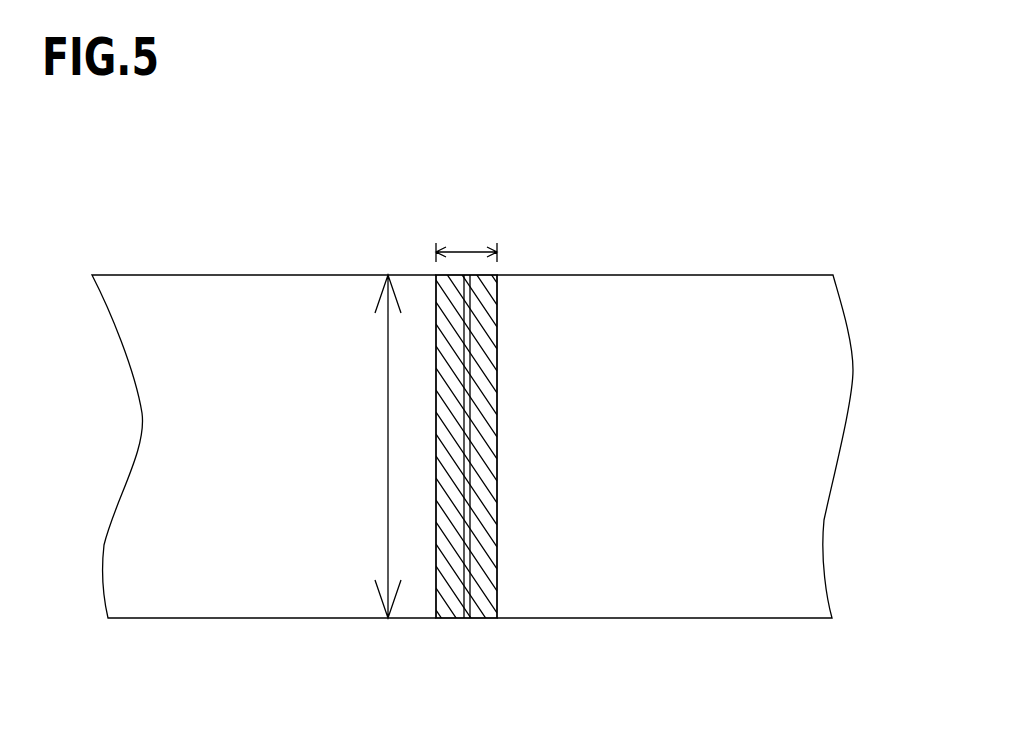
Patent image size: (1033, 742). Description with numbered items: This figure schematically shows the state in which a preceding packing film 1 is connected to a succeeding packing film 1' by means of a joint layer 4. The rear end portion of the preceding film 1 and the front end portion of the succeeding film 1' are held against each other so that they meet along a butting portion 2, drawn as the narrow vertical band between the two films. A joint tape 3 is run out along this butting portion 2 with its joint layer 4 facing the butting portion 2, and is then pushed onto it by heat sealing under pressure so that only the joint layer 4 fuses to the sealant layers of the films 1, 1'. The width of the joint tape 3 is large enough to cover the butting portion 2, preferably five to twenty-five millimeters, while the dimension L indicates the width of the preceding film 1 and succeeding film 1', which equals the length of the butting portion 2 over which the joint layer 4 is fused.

The preceding film 1 is at (264, 390).
The succeeding film 1' is at (675, 388).
The butting portion 2 is at (473, 540).
The joint tape 3 is at (486, 316).
The joint layer 4 is at (536, 397).
The width of preceding film and succeeding film L is at (383, 446).